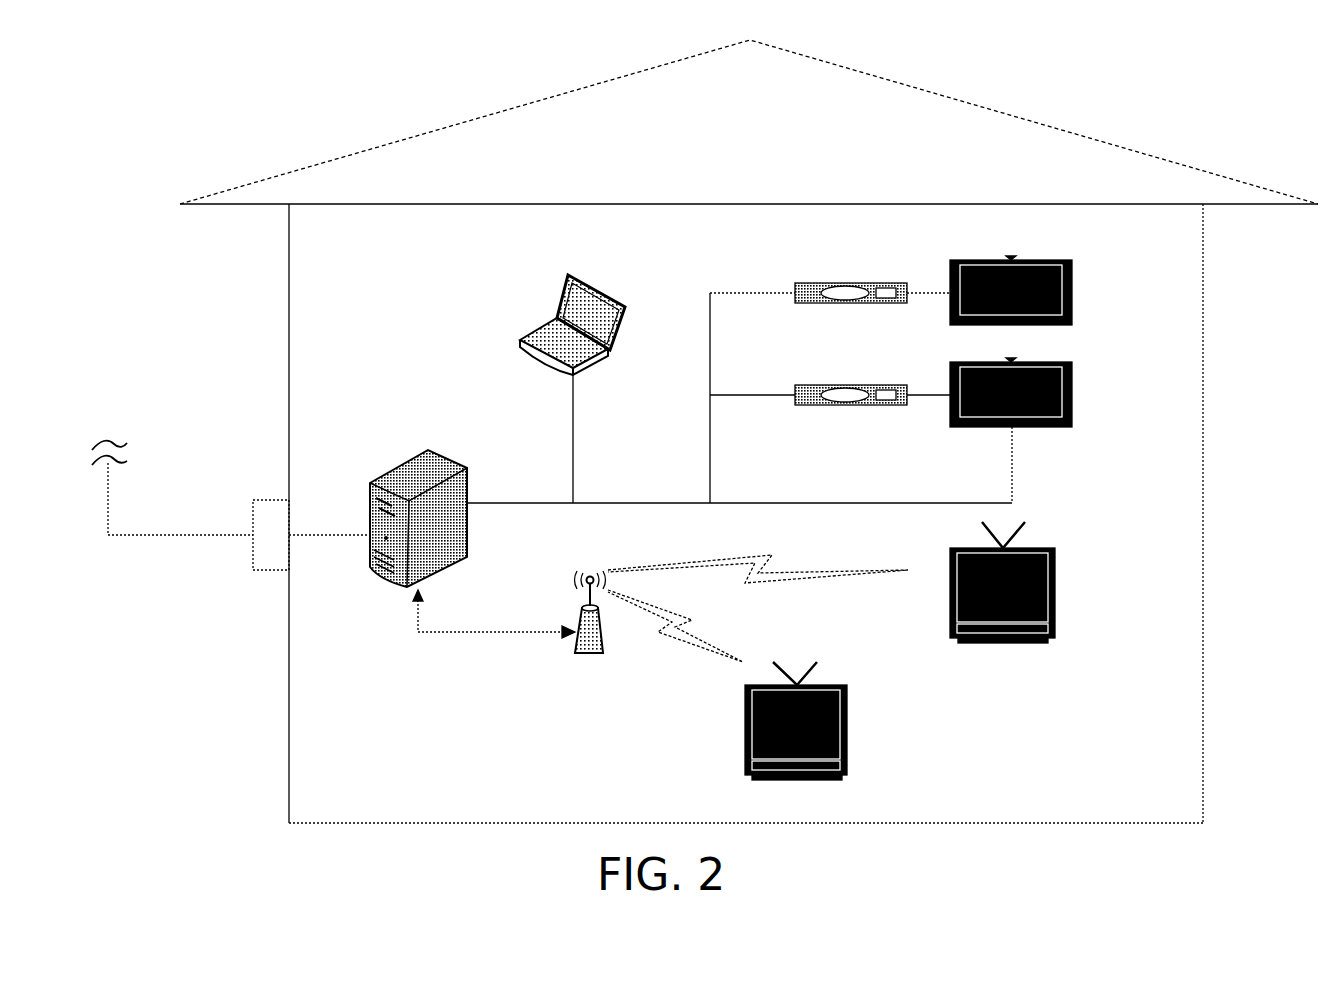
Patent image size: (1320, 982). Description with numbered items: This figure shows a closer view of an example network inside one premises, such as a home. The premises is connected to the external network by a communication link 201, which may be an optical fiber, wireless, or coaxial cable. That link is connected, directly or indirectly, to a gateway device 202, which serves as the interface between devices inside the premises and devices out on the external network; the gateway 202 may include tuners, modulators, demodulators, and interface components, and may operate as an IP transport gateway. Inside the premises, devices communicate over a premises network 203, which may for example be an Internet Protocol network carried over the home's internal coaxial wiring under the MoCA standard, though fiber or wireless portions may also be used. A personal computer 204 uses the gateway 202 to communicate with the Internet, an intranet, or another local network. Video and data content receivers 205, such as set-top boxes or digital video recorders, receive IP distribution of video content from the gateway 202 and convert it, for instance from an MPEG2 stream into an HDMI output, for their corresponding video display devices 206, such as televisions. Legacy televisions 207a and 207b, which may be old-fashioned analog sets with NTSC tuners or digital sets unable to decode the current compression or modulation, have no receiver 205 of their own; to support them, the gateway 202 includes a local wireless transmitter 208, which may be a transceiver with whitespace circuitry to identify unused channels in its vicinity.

The communication link 201 is at (228, 548).
The gateway device 202 is at (402, 462).
The premises network 203 is at (555, 498).
The personal computer 204 is at (528, 323).
The video and data content receiver 205 is at (850, 302).
The video display device 206 is at (950, 363).
The legacy television 207a is at (952, 618).
The legacy television 207b is at (845, 683).
The local wireless transmitter 208 is at (573, 655).